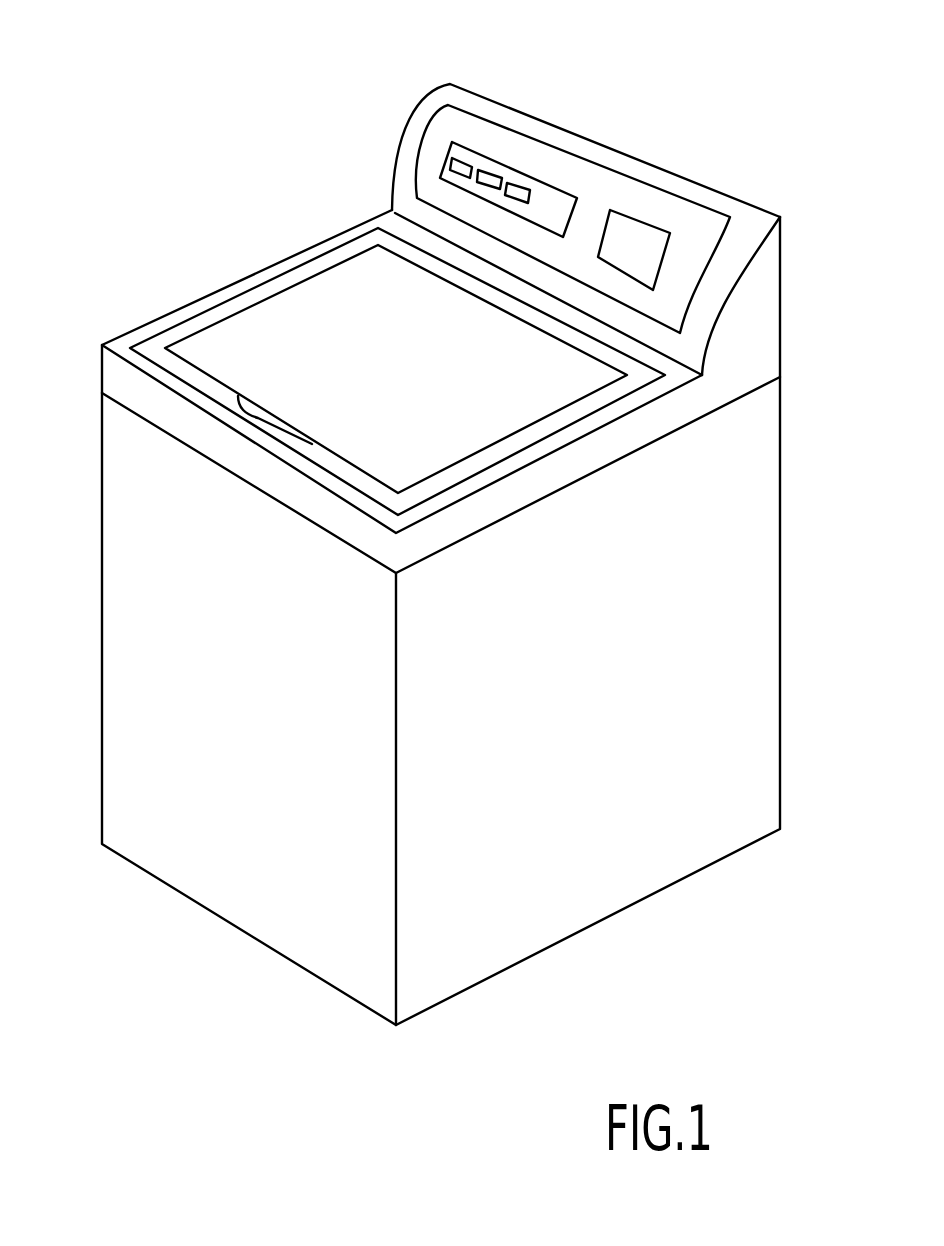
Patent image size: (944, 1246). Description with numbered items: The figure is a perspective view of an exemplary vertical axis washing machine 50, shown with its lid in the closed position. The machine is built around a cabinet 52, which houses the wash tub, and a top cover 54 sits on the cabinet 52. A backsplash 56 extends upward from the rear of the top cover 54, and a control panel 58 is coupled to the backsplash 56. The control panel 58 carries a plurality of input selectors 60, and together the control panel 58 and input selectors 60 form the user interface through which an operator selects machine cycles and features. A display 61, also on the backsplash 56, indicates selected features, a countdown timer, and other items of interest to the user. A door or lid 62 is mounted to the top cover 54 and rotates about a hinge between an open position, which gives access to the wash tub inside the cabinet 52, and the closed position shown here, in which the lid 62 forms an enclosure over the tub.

The vertical axis washing machine 50 is at (654, 105).
The cabinet 52 is at (760, 562).
The top cover 54 is at (113, 378).
The backsplash 56 is at (734, 304).
The control panel 58 is at (552, 198).
The input selectors 60 is at (461, 162).
The display 61 is at (647, 240).
The lid 62 is at (263, 323).